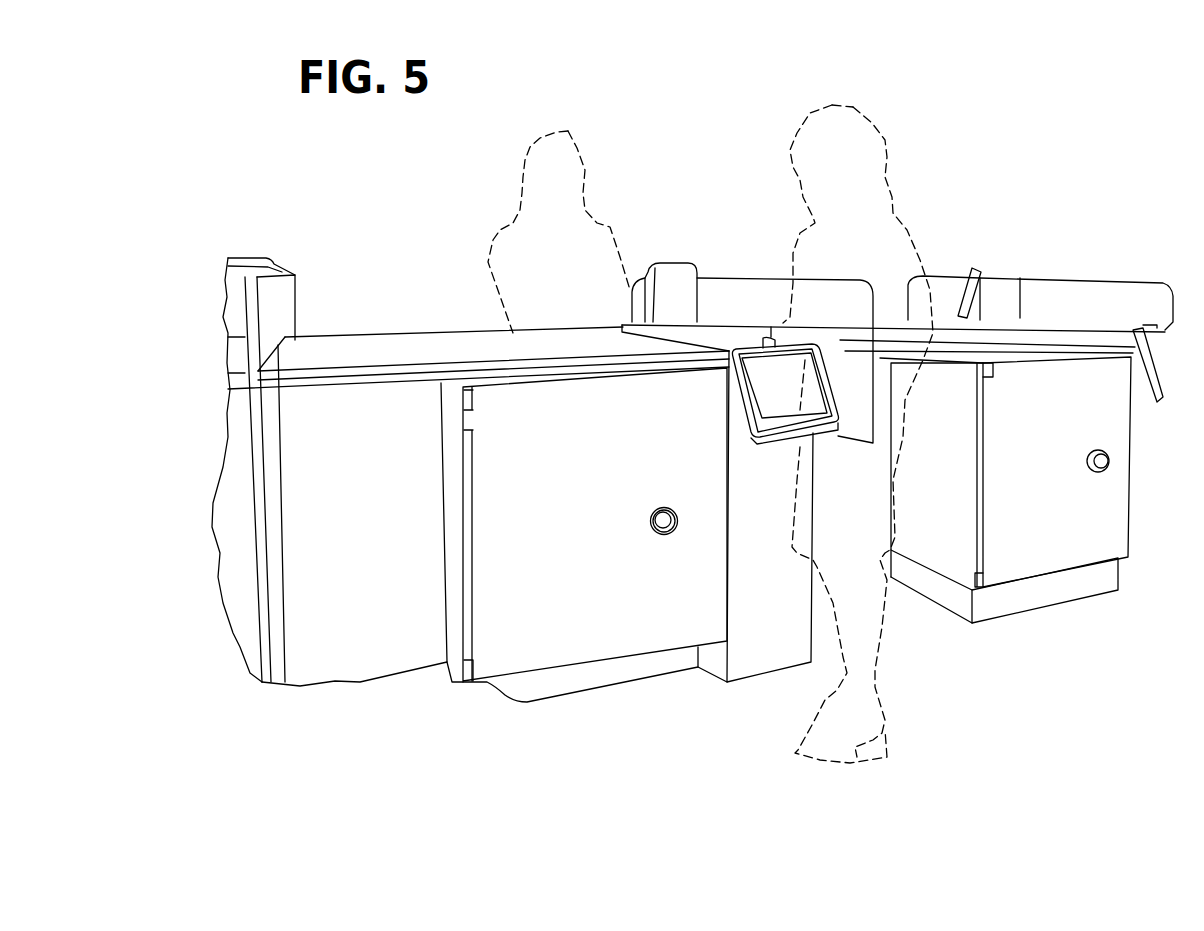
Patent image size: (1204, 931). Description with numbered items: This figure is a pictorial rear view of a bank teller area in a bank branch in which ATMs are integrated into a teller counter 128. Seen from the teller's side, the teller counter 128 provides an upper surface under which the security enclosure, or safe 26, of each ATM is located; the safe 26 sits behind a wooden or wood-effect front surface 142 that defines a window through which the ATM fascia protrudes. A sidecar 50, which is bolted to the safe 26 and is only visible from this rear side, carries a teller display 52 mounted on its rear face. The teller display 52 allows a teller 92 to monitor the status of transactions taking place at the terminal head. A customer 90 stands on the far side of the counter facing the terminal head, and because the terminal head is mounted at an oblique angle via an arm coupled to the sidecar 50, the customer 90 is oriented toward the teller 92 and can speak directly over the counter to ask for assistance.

The teller counter 128 is at (360, 337).
The front surface 142 is at (383, 498).
The security enclosure 26 is at (635, 630).
The sidecar 50 is at (760, 640).
The teller display 52 is at (757, 438).
The customer 90 is at (568, 131).
The teller 92 is at (873, 123).